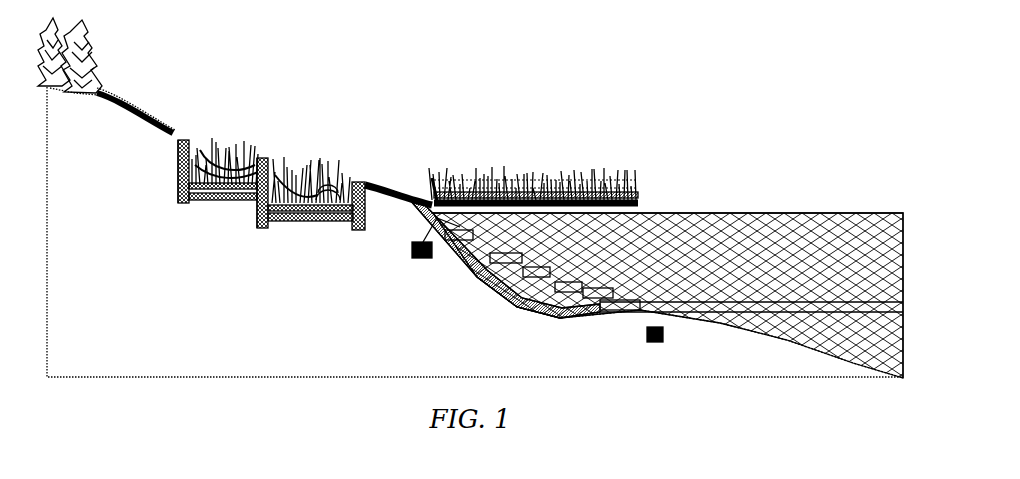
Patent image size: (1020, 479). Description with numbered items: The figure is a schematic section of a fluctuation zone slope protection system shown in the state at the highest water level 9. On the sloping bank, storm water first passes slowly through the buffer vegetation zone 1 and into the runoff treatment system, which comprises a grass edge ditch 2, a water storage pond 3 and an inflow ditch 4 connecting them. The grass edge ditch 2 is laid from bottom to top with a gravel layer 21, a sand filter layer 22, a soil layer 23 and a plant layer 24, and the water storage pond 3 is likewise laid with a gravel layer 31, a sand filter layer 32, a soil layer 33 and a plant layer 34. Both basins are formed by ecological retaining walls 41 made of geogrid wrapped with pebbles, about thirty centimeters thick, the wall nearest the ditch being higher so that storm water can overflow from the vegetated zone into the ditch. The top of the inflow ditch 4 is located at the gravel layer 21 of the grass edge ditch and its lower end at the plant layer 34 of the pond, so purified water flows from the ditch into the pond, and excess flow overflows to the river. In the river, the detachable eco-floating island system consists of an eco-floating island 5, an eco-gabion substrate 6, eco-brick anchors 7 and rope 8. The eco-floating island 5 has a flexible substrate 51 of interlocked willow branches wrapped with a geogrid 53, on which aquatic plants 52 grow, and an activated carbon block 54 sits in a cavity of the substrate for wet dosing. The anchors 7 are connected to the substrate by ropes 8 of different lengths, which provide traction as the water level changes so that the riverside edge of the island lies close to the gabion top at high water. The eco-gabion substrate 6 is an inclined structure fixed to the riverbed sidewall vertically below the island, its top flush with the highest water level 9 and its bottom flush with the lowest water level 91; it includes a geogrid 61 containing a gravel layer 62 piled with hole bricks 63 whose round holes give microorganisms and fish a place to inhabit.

The buffer vegetation zone 1 is at (117, 75).
The grass edge ditch 2 is at (222, 150).
The gravel layer 21 is at (193, 198).
The sand filter layer 22 is at (206, 198).
The soil layer 23 is at (232, 198).
The plant layer 24 is at (240, 160).
The water storage pond 3 is at (334, 173).
The gravel layer 31 is at (295, 220).
The sand filter layer 32 is at (335, 223).
The soil layer 33 is at (350, 178).
The plant layer 34 is at (330, 172).
The inflow ditch 4 is at (240, 200).
The ecological retaining wall 41 is at (178, 182).
The eco-floating island 5 is at (553, 154).
The flexible substrate 51 is at (603, 180).
The aquatic plant 52 is at (530, 173).
The geogrid 53 is at (630, 207).
The activated carbon block 54 is at (447, 173).
The eco-gabion substrate 6 is at (521, 237).
The geogrid 61 is at (500, 245).
The gravel layer 62 is at (532, 317).
The hole brick 63 is at (457, 228).
The anchor 7 is at (422, 260).
The rope 8 is at (647, 318).
The highest water level 9 is at (685, 258).
The lowest water level 91 is at (857, 303).